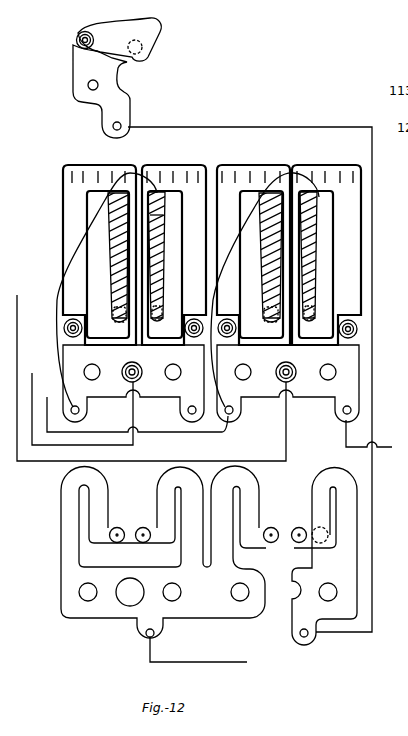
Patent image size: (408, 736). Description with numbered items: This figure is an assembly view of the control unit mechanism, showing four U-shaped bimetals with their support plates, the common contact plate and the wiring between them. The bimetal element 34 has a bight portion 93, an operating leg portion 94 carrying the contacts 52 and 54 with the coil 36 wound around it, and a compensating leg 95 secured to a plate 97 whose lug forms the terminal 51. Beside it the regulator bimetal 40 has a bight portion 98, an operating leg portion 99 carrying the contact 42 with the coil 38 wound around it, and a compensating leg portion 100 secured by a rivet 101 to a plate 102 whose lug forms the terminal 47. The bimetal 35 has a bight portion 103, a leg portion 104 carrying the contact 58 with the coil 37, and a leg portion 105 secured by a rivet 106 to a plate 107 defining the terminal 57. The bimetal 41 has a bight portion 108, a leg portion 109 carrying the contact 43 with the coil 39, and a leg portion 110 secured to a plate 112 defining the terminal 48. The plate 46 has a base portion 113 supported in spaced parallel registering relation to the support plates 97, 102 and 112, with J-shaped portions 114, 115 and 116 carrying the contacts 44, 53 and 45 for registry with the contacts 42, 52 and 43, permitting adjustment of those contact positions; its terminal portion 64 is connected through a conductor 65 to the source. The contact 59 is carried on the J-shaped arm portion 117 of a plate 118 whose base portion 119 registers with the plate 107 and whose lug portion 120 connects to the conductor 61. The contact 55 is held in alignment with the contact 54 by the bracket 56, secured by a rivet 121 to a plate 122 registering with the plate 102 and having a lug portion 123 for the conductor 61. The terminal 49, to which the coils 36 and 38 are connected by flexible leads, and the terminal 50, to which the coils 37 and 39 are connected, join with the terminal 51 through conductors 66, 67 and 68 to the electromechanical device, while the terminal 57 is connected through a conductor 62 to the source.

The bimetal element 34 is at (181, 163).
The bimetal 35 is at (336, 159).
The coil 36 is at (152, 267).
The coil 37 is at (303, 270).
The coil 38 is at (118, 257).
The coil 39 is at (271, 258).
The regulator bimetal 40 is at (96, 159).
The bimetal 41 is at (250, 159).
The contact 42 is at (121, 331).
The contact 43 is at (276, 329).
The contact 44 is at (112, 528).
The contact 45 is at (265, 528).
The plate 46 is at (54, 583).
The terminal 47 is at (77, 418).
The terminal 48 is at (231, 421).
The terminal 49 is at (142, 367).
The terminal 50 is at (295, 367).
The terminal 51 is at (192, 422).
The contact 52 is at (153, 307).
The contact 53 is at (151, 527).
The contact 54 is at (146, 320).
The contact 55 is at (154, 38).
The bracket 56 is at (134, 33).
The terminal 57 is at (338, 421).
The contact 58 is at (301, 323).
The contact 59 is at (304, 527).
The conductor 61 is at (303, 127).
The conductor 62 is at (374, 450).
The terminal portion 64 is at (142, 637).
The conductor 65 is at (200, 662).
The conductor 66 is at (42, 371).
The conductor 67 is at (17, 297).
The conductor 68 is at (60, 399).
The bight portion 93 is at (158, 180).
The operating leg portion 94 is at (157, 217).
The compensating leg 95 is at (187, 246).
The plate 97 is at (175, 396).
The bight portion 98 is at (102, 182).
The operating leg portion 99 is at (115, 288).
The compensating leg portion 100 is at (66, 215).
The rivet 101 is at (62, 329).
The plate 102 is at (103, 392).
The bight portion 103 is at (347, 172).
The leg portion 104 is at (304, 292).
The leg portion 105 is at (351, 242).
The rivet 106 is at (360, 331).
The plate 107 is at (338, 393).
The bight portion 108 is at (254, 173).
The leg portion 109 is at (269, 275).
The leg portion 110 is at (208, 205).
The plate 112 is at (258, 392).
The base portion 113 is at (94, 612).
The J-shaped portion 114 is at (69, 505).
The J-shaped portion 115 is at (188, 484).
The J-shaped portion 116 is at (249, 481).
The J-shaped arm portion 117 is at (340, 478).
The plate 118 is at (366, 582).
The base portion 119 is at (347, 603).
The lug portion 120 is at (310, 642).
The rivet 121 is at (77, 35).
The plate 122 is at (80, 64).
The lug portion 123 is at (127, 123).